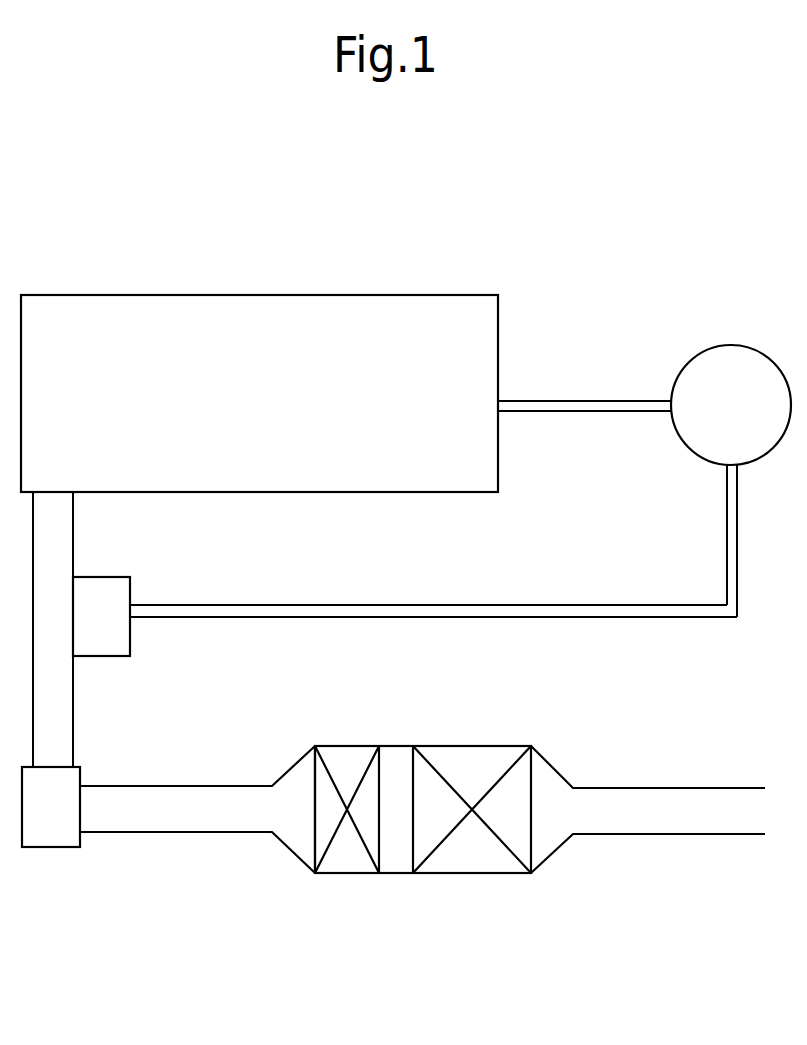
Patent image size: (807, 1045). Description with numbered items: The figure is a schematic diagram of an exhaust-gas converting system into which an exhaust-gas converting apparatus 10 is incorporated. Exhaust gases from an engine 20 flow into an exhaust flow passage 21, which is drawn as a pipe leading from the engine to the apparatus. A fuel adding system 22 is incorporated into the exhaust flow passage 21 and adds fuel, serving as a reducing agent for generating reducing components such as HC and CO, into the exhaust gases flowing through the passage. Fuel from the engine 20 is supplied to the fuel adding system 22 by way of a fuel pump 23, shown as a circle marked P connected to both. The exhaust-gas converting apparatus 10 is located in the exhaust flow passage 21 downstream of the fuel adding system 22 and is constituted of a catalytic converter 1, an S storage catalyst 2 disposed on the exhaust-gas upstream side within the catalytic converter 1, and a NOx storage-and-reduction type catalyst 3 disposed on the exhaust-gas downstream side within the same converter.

The catalytic converter 1 is at (437, 864).
The S storage catalyst 2 is at (312, 840).
The NOx storage-and-reduction type catalyst 3 is at (528, 843).
The exhaust-gas converting apparatus 10 is at (437, 895).
The engine 20 is at (118, 295).
The exhaust flow passage 21 is at (150, 832).
The fuel adding system 22 is at (96, 590).
The fuel pump 23 is at (728, 345).